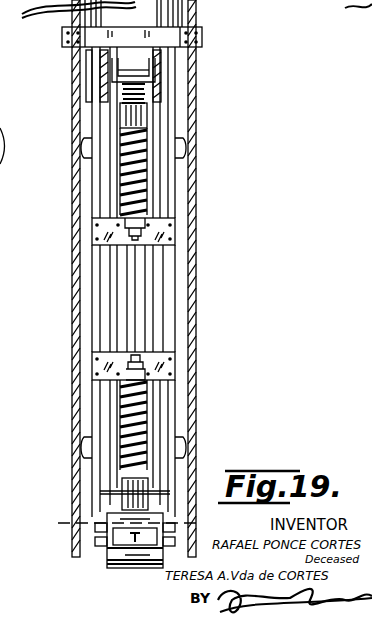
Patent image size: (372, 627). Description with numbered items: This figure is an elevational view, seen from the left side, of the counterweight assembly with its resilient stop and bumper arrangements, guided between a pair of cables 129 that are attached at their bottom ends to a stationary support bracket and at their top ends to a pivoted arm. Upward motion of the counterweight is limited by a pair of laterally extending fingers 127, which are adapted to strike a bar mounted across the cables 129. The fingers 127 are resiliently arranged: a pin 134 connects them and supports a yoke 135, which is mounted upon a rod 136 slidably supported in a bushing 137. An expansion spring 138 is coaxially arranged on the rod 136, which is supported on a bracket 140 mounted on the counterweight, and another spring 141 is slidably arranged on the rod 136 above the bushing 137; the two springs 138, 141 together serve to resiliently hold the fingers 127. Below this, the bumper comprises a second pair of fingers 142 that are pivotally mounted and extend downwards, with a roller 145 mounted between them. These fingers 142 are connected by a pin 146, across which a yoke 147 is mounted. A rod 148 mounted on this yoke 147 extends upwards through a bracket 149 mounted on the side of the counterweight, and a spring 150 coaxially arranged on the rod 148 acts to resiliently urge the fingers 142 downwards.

The fingers 127 is at (100, 56).
The cables 129 is at (74, 185).
The pin 134 is at (202, 31).
The yoke 135 is at (100, 82).
The rod 136 is at (92, 142).
The bushing 137 is at (160, 111).
The expansion spring 138 is at (148, 162).
The bracket 140 is at (175, 229).
The spring 141 is at (143, 75).
The fingers 142 is at (190, 523).
The roller 145 is at (140, 563).
The pin 146 is at (116, 570).
The yoke 147 is at (68, 524).
The rod 148 is at (140, 356).
The bracket 149 is at (175, 380).
The spring 150 is at (148, 415).